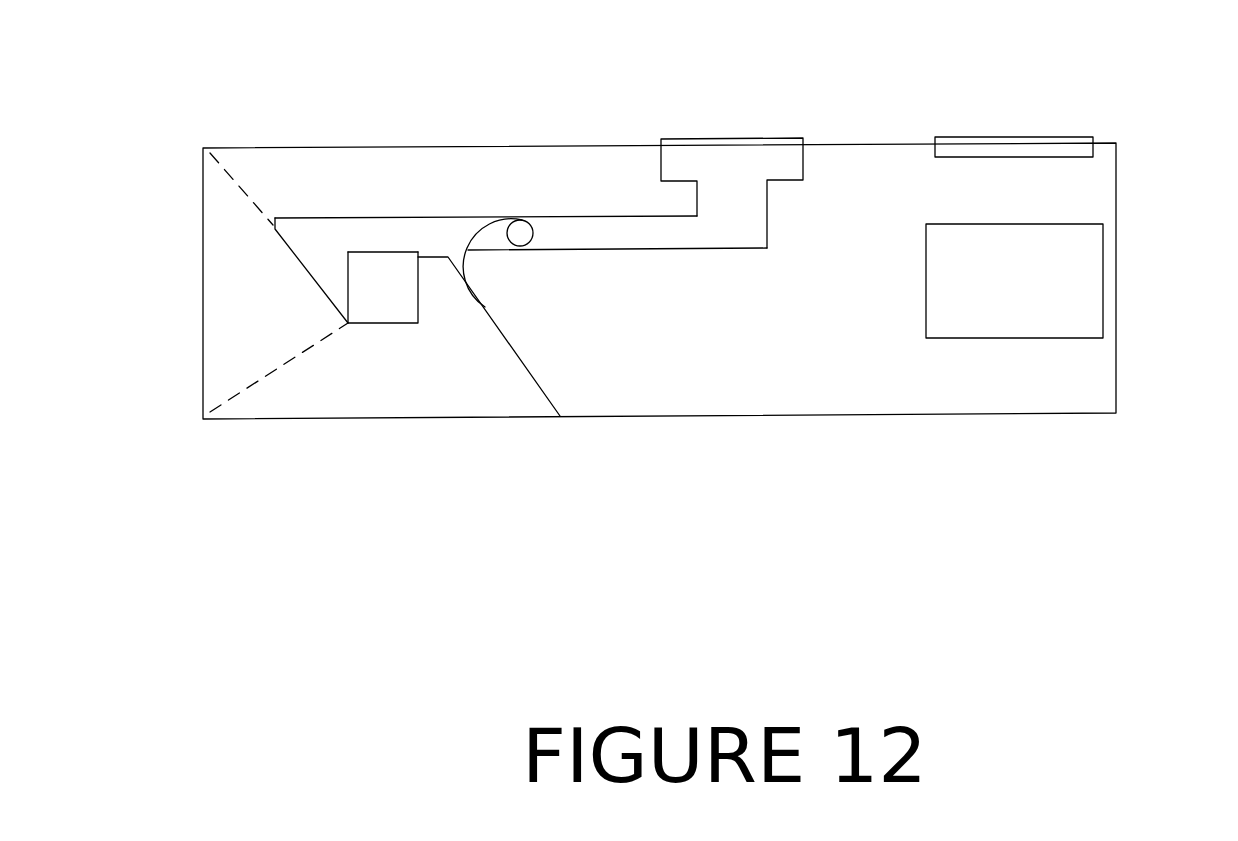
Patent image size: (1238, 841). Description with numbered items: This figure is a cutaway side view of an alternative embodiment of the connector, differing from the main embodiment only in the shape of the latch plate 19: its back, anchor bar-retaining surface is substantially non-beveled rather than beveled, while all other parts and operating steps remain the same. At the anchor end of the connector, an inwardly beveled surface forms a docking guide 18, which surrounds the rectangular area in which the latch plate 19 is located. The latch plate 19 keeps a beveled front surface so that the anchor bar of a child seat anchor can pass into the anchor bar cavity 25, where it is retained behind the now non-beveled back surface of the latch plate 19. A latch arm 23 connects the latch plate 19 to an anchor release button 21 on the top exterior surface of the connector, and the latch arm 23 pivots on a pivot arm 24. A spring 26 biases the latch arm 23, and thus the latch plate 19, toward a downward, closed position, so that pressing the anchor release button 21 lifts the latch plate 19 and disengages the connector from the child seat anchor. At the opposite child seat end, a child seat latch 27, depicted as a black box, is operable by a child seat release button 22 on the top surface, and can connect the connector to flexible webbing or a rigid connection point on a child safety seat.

The docking guide 18 is at (265, 360).
The latch plate 19 is at (332, 273).
The anchor release button 21 is at (724, 138).
The child seat release button 22 is at (1015, 125).
The latch arm 23 is at (390, 228).
The pivot arm 24 is at (521, 220).
The anchor bar cavity 25 is at (387, 292).
The spring 26 is at (475, 272).
The child seat latch 27 is at (1062, 287).